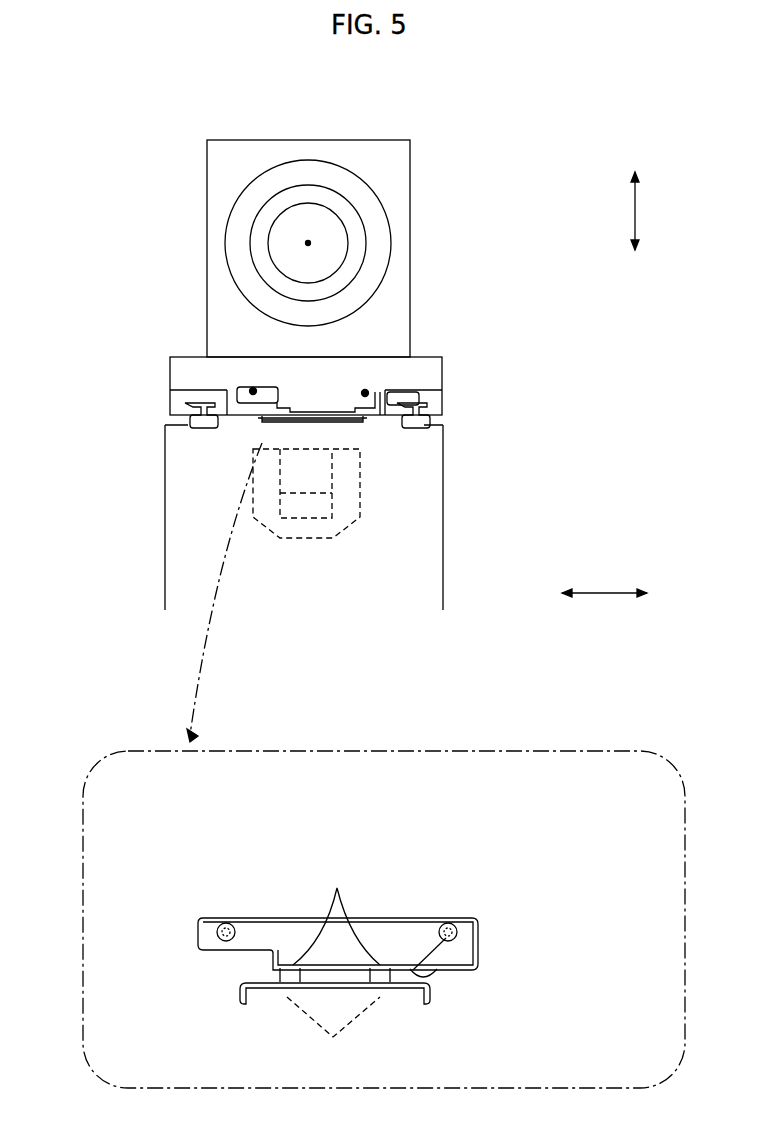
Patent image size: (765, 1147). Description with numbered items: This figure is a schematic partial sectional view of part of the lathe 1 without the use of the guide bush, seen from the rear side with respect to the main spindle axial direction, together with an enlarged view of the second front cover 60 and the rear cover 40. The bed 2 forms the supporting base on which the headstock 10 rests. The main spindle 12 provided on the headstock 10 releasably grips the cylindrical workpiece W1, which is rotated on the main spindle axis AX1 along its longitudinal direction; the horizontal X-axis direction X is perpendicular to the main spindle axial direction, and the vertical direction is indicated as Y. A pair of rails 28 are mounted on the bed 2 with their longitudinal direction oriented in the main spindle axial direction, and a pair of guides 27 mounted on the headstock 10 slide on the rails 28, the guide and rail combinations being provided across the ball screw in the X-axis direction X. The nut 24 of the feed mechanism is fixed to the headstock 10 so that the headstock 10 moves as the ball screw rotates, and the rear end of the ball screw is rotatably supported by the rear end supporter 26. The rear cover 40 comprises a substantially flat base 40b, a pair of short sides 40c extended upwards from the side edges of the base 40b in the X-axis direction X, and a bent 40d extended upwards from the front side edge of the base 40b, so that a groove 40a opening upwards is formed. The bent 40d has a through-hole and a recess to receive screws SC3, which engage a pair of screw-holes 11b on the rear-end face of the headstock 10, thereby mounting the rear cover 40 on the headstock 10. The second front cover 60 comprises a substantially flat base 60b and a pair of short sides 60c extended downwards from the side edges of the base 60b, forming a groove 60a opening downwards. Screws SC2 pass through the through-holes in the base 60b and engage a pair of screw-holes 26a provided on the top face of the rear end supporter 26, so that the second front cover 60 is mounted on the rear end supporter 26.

The lathe 1 is at (210, 105).
The bed 2 is at (445, 562).
The headstock 10 is at (414, 184).
The main spindle 12 is at (350, 198).
The workpiece W1 is at (298, 203).
The main spindle axis AX1 is at (308, 243).
The nut 24 is at (320, 542).
The rear end supporter 26 is at (356, 470).
The screw-holes 26a is at (333, 1033).
The guides 27 is at (186, 406).
The rails 28 is at (230, 395).
The rear cover 40 is at (387, 385).
The groove 40a is at (373, 393).
The base 40b is at (470, 953).
The short sides 40c is at (272, 960).
The bent 40d is at (365, 392).
The second front cover 60 is at (372, 414).
The groove 60a is at (273, 430).
The base 60b is at (265, 972).
The short sides 60c is at (267, 425).
The screw-holes 11b is at (230, 925).
The screws SC2 is at (332, 408).
The screws SC3 is at (365, 393).
The X-axis direction X is at (604, 609).
The Y direction Y is at (662, 211).